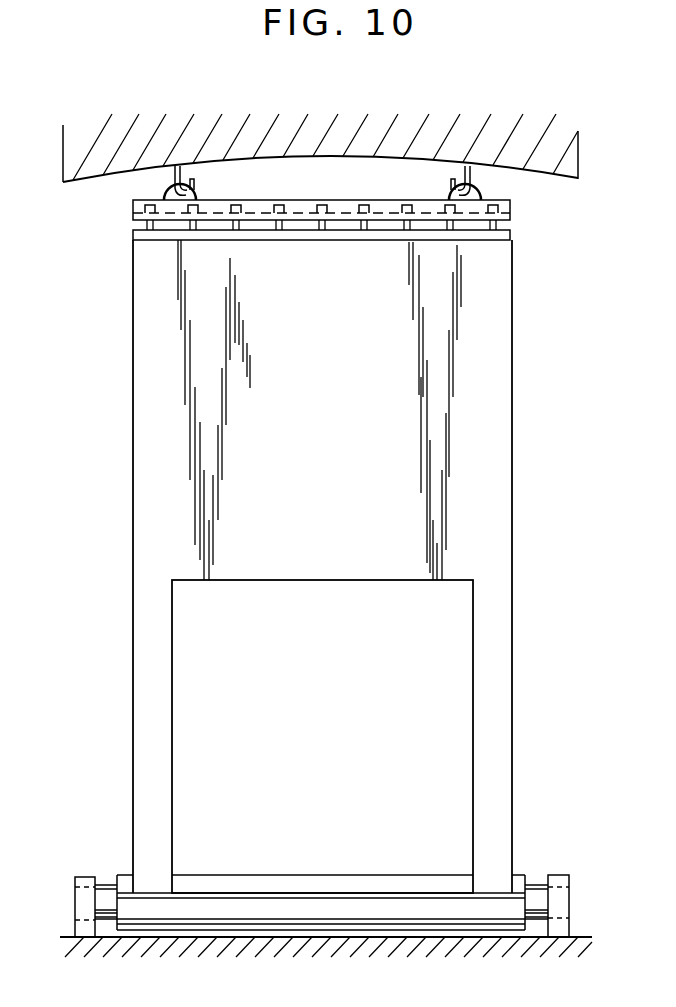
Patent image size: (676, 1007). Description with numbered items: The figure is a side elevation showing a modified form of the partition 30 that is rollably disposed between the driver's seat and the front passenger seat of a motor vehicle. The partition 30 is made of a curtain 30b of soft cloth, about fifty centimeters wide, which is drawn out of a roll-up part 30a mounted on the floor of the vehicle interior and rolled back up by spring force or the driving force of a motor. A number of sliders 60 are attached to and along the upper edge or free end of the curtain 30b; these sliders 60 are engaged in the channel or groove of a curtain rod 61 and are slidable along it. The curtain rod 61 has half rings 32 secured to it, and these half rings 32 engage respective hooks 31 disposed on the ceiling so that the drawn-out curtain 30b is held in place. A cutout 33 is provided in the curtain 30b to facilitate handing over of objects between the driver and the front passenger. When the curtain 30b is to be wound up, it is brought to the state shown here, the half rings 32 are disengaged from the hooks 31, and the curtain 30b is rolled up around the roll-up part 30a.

The partition 30 is at (332, 561).
The roll-up part 30a is at (330, 931).
The curtain 30b is at (497, 472).
The hooks 31 is at (172, 170).
The half rings 32 is at (199, 193).
The cutout 33 is at (473, 688).
The sliders 60 is at (358, 226).
The curtain rod 61 is at (300, 208).